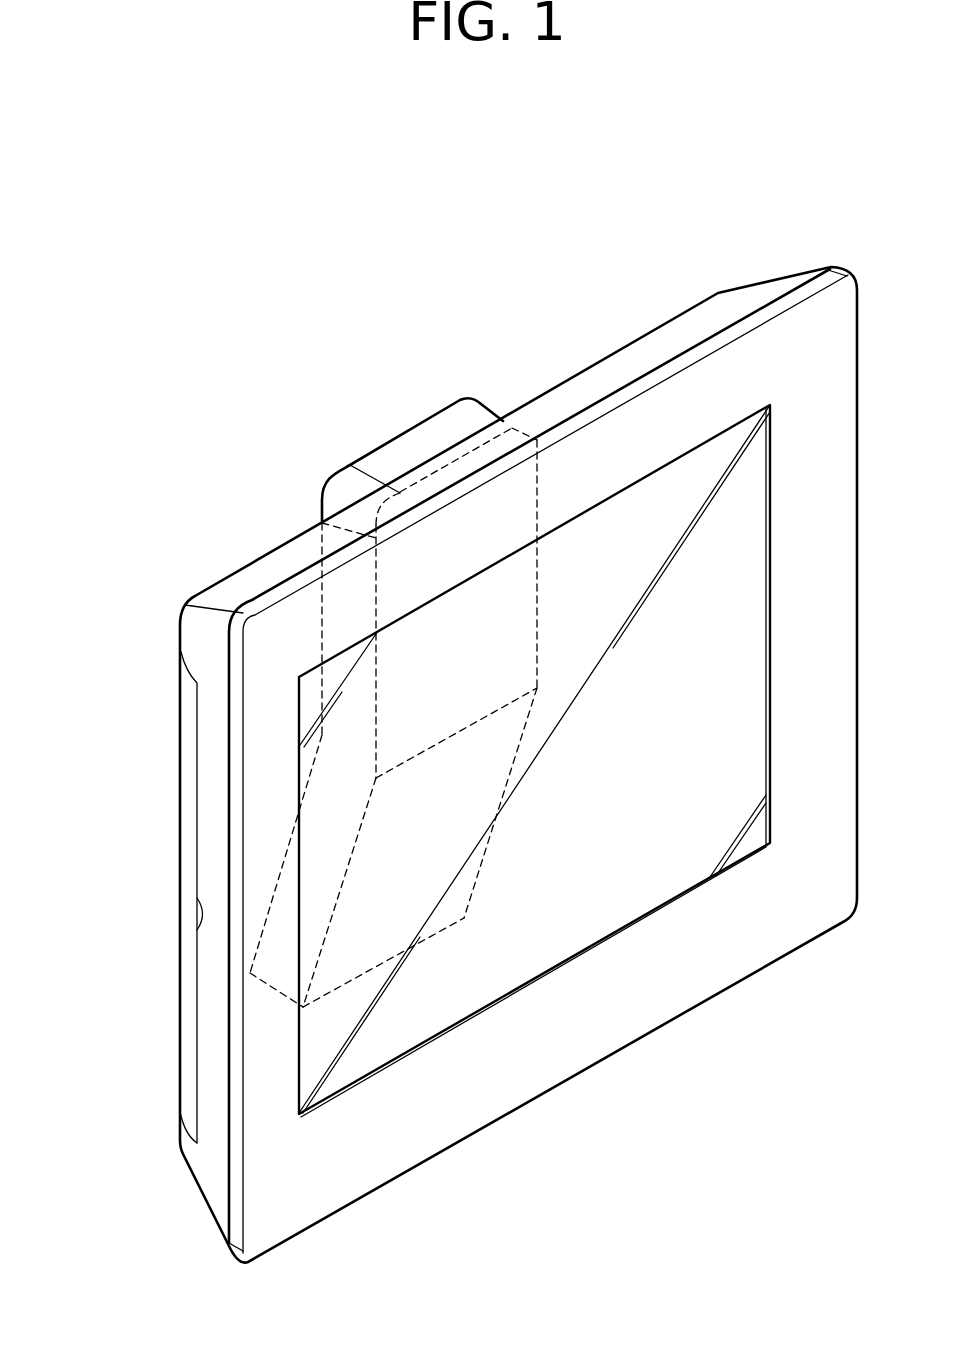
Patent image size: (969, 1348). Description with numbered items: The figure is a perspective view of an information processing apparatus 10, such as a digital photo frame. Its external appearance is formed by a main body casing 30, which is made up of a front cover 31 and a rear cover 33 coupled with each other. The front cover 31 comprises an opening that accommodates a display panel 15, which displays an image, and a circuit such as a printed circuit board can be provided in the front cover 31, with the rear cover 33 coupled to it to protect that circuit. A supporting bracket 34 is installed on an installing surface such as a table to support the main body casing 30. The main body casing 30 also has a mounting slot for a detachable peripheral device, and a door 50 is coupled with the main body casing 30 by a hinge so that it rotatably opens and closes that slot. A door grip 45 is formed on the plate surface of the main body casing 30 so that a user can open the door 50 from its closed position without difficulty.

The information processing apparatus 10 is at (143, 328).
The display panel 15 is at (605, 866).
The main body casing 30 is at (72, 667).
The front cover 31 is at (242, 668).
The rear cover 33 is at (210, 773).
The supporting bracket 34 is at (397, 448).
The door grip 45 is at (197, 914).
The door 50 is at (187, 850).